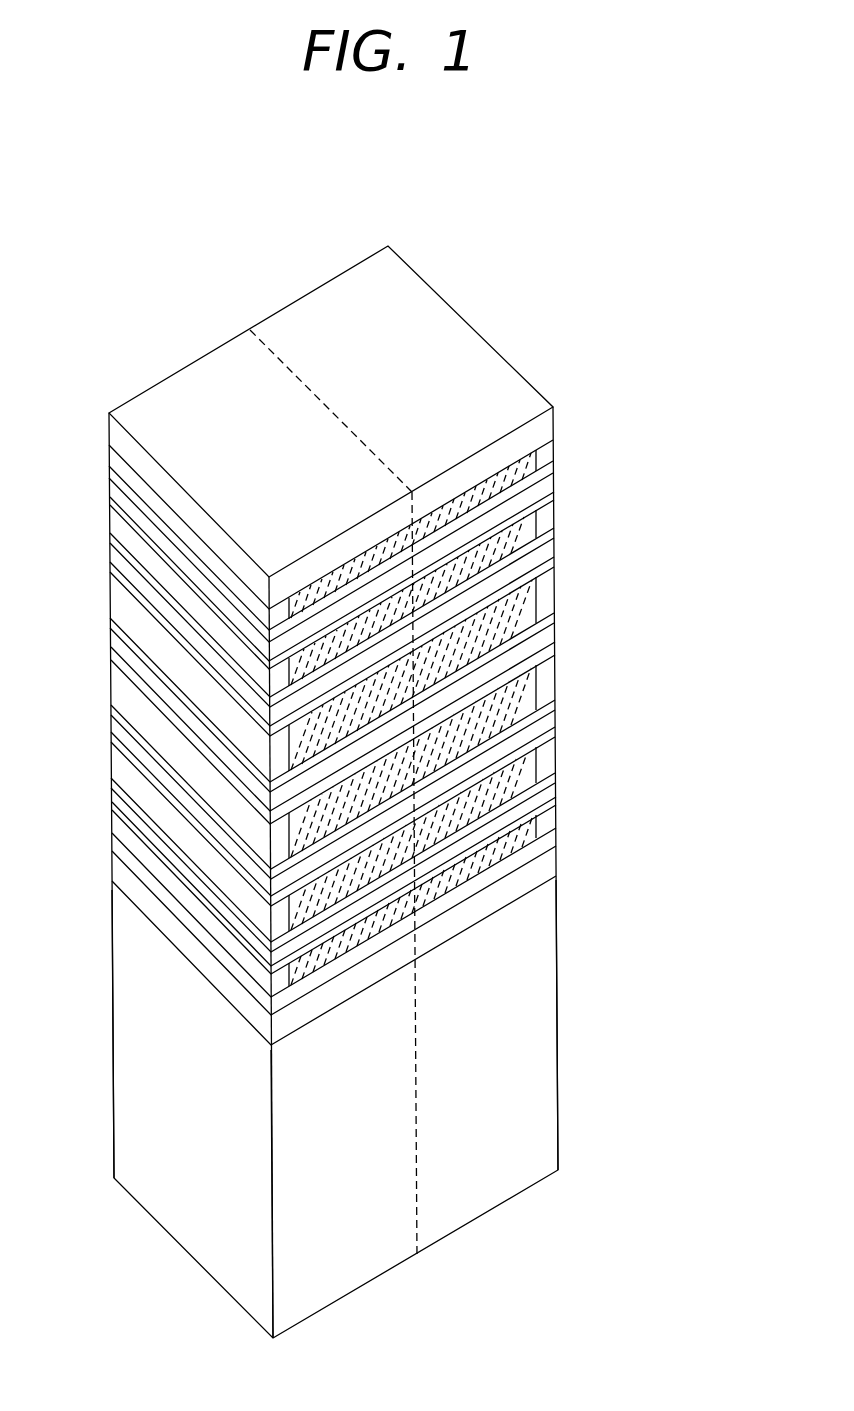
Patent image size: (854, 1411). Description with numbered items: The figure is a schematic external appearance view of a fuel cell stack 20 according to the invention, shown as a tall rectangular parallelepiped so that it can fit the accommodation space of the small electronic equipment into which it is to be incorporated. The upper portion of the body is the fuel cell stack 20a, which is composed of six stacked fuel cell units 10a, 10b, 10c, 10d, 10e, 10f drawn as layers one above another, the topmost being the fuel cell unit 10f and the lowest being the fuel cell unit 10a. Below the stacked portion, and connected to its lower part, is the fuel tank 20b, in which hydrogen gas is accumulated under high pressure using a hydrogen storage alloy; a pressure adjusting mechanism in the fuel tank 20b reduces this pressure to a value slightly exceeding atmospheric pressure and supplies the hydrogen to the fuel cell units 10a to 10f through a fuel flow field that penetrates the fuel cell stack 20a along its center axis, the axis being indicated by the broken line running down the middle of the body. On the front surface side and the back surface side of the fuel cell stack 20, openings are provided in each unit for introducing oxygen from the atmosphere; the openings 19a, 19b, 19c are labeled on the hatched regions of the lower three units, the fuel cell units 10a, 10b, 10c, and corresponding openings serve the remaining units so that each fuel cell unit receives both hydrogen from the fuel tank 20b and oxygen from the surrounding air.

The fuel cell stack 20 is at (431, 227).
The fuel cell stack 20a is at (653, 366).
The fuel tank 20b is at (571, 1104).
The fuel cell unit 10a is at (381, 891).
The fuel cell unit 10b is at (380, 819).
The fuel cell unit 10c is at (380, 744).
The fuel cell unit 10d is at (558, 582).
The fuel cell unit 10e is at (558, 508).
The fuel cell unit 10f is at (558, 446).
The opening 19a is at (438, 887).
The opening 19b is at (437, 827).
The opening 19c is at (437, 748).